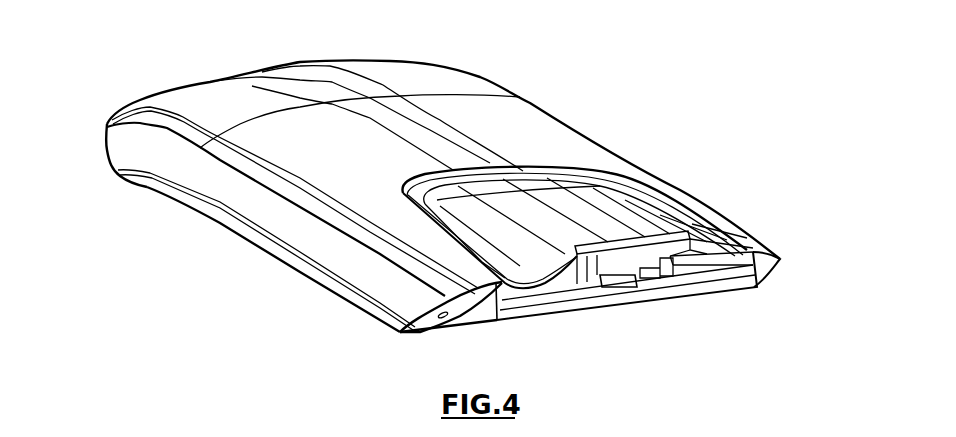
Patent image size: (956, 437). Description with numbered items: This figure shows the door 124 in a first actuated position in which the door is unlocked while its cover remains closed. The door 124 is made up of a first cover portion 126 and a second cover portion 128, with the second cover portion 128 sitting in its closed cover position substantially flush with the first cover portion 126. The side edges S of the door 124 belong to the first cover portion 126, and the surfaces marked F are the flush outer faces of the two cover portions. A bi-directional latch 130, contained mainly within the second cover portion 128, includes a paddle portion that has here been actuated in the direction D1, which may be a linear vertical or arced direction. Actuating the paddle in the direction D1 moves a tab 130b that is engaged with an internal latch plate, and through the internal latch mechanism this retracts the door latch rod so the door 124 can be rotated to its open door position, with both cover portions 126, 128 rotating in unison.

The door 124 is at (133, 213).
The first cover portion 126 is at (290, 98).
The second cover portion 128 is at (657, 223).
The bi-directional latch 130 is at (563, 277).
The tab 130b is at (618, 257).
The side edges S is at (307, 223).
The flat surface F is at (443, 187).
The first direction D1 is at (802, 242).